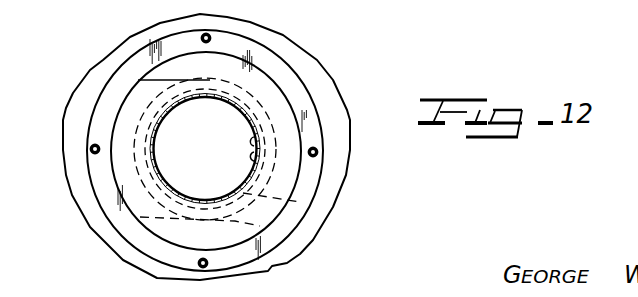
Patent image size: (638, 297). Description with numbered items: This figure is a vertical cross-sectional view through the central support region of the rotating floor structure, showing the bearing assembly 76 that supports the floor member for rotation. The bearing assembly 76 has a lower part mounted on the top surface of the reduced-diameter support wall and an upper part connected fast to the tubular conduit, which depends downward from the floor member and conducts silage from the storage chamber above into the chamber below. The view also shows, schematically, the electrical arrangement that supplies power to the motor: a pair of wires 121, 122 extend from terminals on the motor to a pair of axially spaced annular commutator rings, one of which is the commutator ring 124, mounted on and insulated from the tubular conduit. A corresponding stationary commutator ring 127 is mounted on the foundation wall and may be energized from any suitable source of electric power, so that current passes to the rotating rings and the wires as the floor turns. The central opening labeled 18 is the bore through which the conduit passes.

The bearing assembly 76 is at (122, 174).
The central bore 18 is at (153, 151).
The wire 122 is at (250, 128).
The wire 121 is at (252, 162).
The stationary commutator ring 127 is at (300, 202).
The commutator ring 124 is at (260, 226).